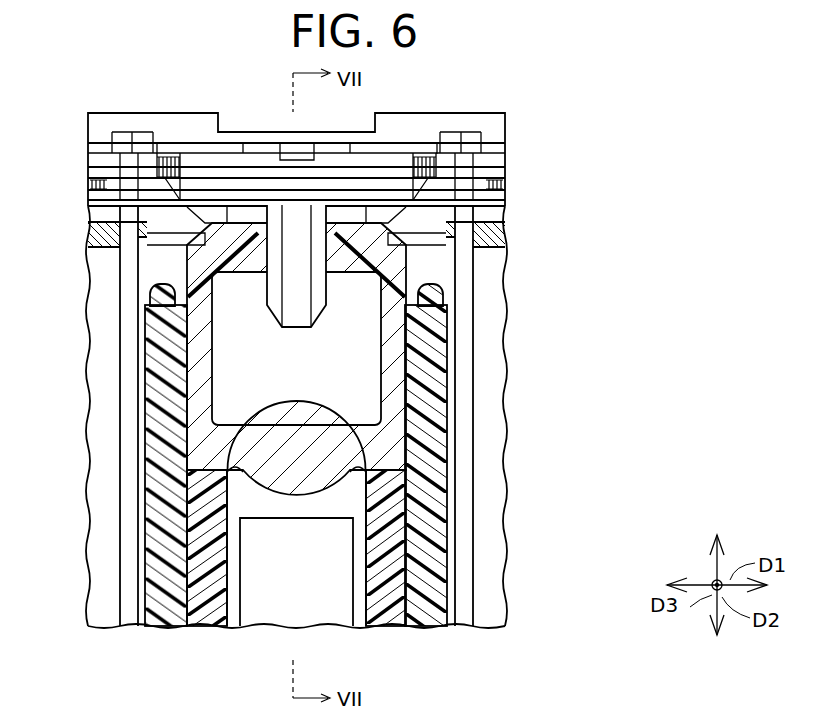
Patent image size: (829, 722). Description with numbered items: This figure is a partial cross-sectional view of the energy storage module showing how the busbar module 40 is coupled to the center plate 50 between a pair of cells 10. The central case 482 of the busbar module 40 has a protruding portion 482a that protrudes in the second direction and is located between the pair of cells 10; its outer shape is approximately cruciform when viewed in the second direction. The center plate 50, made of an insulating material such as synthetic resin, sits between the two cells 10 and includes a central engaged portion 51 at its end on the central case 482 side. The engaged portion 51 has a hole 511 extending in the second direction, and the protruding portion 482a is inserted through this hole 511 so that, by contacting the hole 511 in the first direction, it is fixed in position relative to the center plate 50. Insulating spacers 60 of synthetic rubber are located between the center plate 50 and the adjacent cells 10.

The cell 10 is at (92, 446).
The busbar module 40 is at (365, 179).
The central case 482 is at (297, 170).
The protruding portion 482a is at (297, 248).
The center plate 50 is at (396, 507).
The central engaged portion 51 is at (218, 359).
The hole 511 is at (322, 263).
The spacer 60 is at (157, 628).